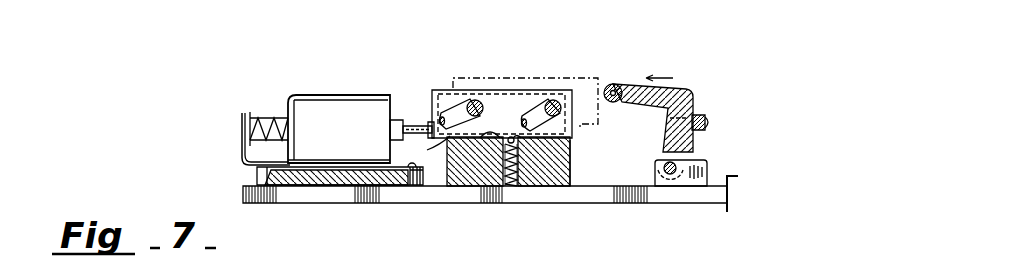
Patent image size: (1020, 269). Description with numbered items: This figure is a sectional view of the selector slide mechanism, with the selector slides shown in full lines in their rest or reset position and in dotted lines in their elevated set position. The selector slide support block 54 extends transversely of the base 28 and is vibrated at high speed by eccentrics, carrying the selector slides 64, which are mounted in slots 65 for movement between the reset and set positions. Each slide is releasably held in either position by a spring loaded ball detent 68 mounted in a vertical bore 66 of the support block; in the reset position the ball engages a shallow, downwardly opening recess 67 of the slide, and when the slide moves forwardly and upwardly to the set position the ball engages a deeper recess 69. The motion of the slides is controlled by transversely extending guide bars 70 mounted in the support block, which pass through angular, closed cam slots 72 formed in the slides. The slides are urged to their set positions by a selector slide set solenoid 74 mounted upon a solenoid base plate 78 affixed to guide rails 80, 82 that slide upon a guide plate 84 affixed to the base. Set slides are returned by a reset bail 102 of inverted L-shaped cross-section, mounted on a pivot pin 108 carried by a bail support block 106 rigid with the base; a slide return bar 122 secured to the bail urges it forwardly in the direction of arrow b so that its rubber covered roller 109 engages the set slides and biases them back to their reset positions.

The base 28 is at (670, 198).
The selector slide support block 54 is at (567, 178).
The selector slide 64 is at (495, 88).
The slot 65 is at (425, 141).
The vertical bore 66 is at (518, 187).
The shallow recess 67 is at (544, 161).
The spring loaded ball detent 68 is at (475, 161).
The deeper recess 69 is at (500, 108).
The guide bar 70 is at (478, 100).
The cam slot 72 is at (440, 114).
The selector slide set solenoid 74 is at (333, 112).
The solenoid base plate 78 is at (244, 146).
The guide rail 80 is at (308, 203).
The guide rail 82 is at (417, 183).
The guide plate 84 is at (323, 183).
The reset bail 102 is at (687, 100).
The bail support block 106 is at (752, 170).
The pivot pin 108 is at (687, 157).
The rubber covered roller 109 is at (615, 84).
The slide return bar 122 is at (708, 121).